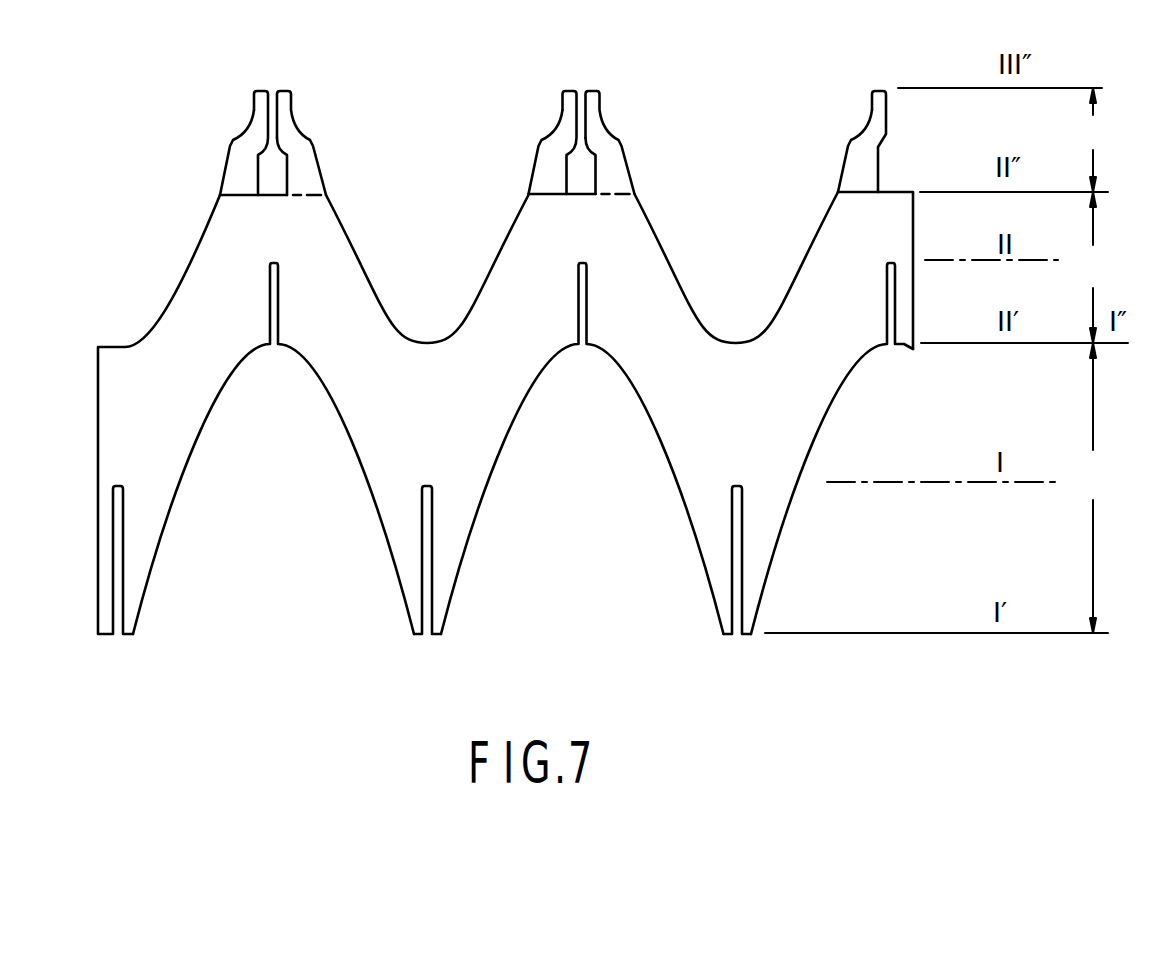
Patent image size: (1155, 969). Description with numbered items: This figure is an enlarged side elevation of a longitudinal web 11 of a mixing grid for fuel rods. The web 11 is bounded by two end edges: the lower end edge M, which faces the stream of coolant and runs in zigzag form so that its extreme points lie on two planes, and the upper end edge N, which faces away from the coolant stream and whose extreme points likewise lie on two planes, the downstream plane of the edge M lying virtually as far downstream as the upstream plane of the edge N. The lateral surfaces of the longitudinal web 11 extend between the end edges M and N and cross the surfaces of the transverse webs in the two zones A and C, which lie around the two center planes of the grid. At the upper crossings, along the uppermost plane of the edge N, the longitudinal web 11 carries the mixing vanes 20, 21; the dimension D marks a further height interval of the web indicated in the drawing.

The longitudinal web 11 is at (800, 303).
The mixing vane 20 is at (538, 160).
The mixing vane 21 is at (620, 157).
The upper end edge N is at (672, 277).
The lower end edge M is at (447, 612).
The crossing zone A is at (1093, 488).
The crossing zone C is at (1093, 267).
The dimension D is at (1093, 140).